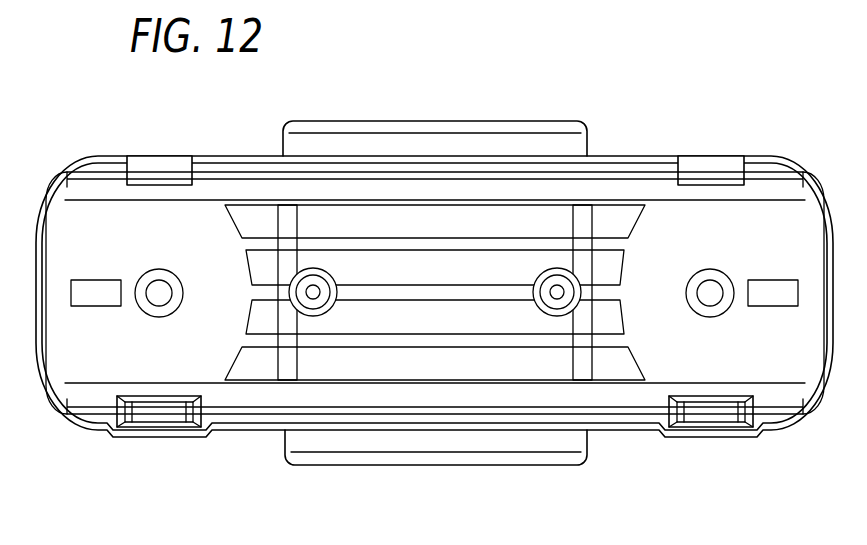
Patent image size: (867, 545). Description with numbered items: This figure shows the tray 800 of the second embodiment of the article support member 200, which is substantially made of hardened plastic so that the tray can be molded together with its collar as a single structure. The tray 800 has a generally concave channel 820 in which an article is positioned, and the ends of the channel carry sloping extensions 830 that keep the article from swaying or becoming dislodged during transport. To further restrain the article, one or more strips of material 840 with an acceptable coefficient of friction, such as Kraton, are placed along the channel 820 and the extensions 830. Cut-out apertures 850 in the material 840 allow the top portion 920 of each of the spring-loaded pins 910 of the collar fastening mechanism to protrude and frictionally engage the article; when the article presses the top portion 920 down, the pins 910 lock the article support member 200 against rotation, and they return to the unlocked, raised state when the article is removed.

The article support member 200 is at (424, 273).
The tray 800 is at (434, 273).
The channel 820 is at (435, 208).
The sloping extensions 830 is at (243, 165).
The strips of material 840 is at (435, 221).
The cut-out apertures 850 is at (435, 268).
The pins 910 is at (537, 305).
The top portion 920 is at (320, 281).